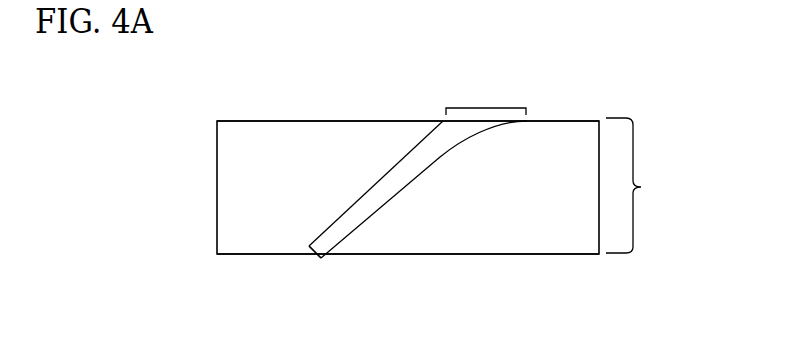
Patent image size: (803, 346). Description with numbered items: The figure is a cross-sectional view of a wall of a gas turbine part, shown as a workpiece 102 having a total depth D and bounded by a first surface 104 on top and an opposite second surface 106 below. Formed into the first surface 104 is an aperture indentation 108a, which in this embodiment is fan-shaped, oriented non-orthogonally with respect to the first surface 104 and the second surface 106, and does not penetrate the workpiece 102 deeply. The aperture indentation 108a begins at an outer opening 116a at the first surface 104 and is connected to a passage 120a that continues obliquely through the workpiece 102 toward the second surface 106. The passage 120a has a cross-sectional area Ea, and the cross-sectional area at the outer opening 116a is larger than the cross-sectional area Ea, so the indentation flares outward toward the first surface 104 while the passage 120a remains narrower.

The workpiece 102 is at (229, 245).
The first surface 104 is at (262, 120).
The second surface 106 is at (585, 254).
The aperture indentation 108a is at (428, 129).
The outer opening 116a is at (483, 108).
The passage 120a is at (307, 244).
The cross-sectional area Ea is at (314, 254).
The total depth D is at (644, 187).